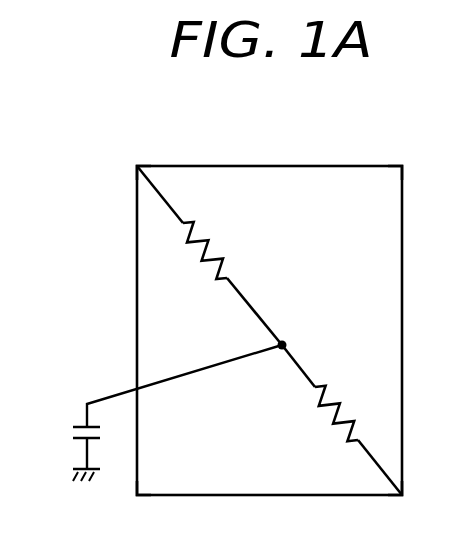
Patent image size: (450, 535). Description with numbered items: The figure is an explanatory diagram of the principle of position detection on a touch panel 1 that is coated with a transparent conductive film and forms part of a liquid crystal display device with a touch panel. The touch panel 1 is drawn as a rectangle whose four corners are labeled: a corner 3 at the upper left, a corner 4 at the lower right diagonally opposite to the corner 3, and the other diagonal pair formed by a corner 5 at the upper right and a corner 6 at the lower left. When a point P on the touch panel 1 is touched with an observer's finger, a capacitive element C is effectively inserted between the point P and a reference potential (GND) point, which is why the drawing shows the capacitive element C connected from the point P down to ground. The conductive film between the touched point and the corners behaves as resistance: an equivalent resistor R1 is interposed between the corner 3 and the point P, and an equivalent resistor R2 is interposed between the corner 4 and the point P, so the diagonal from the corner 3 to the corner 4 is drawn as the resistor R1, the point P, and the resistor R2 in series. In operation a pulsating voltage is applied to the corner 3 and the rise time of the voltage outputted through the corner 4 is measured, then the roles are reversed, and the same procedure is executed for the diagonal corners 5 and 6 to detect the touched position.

The touch panel 1 is at (270, 178).
The corner 3 is at (133, 159).
The corner 4 is at (408, 502).
The corner 5 is at (405, 157).
The corner 6 is at (134, 504).
The point P is at (294, 331).
The equivalent resistor R1 is at (209, 255).
The equivalent resistor R2 is at (342, 420).
The capacitive element C is at (164, 413).